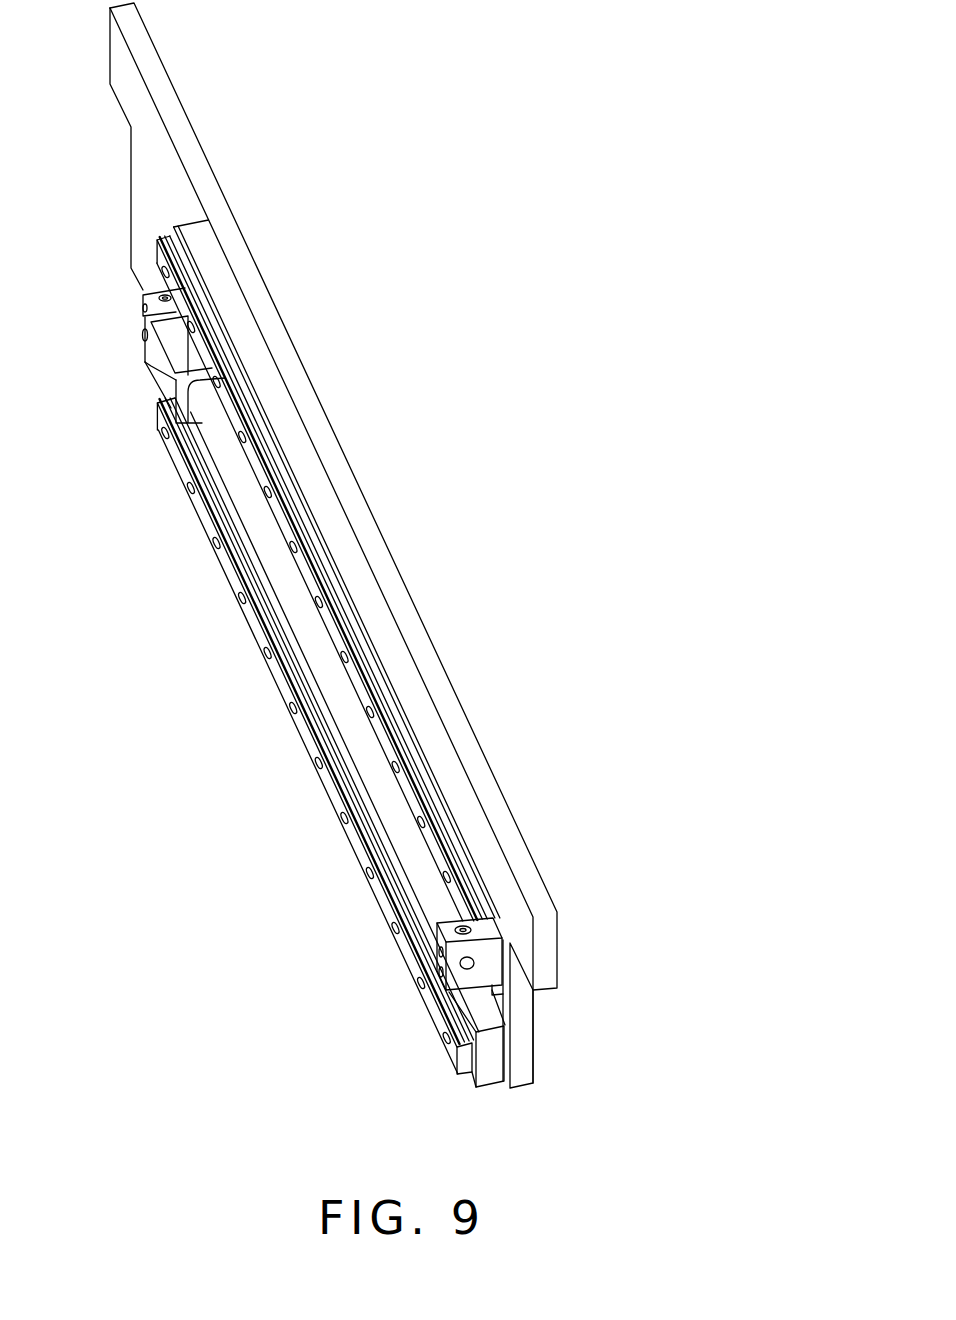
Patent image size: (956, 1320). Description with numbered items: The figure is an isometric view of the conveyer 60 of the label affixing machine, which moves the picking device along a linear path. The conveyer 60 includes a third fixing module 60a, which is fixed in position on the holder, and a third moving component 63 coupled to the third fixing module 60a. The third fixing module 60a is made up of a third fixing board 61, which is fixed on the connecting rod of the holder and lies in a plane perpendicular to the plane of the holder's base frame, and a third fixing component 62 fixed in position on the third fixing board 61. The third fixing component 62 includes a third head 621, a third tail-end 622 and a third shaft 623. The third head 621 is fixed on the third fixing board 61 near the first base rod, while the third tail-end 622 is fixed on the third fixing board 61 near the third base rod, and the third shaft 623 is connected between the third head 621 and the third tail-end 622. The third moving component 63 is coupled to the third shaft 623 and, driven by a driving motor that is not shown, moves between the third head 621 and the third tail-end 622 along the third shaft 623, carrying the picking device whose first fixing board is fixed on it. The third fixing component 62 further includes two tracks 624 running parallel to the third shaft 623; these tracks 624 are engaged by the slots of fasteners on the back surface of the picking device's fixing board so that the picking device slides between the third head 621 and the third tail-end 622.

The conveyer 60 is at (513, 71).
The third fixing module 60a is at (397, 98).
The third fixing board 61 is at (193, 163).
The third fixing component 62 is at (373, 220).
The third head 621 is at (152, 300).
The third tail-end 622 is at (488, 958).
The third shaft 623 is at (248, 487).
The tracks 624 is at (207, 453).
The third moving component 63 is at (166, 378).